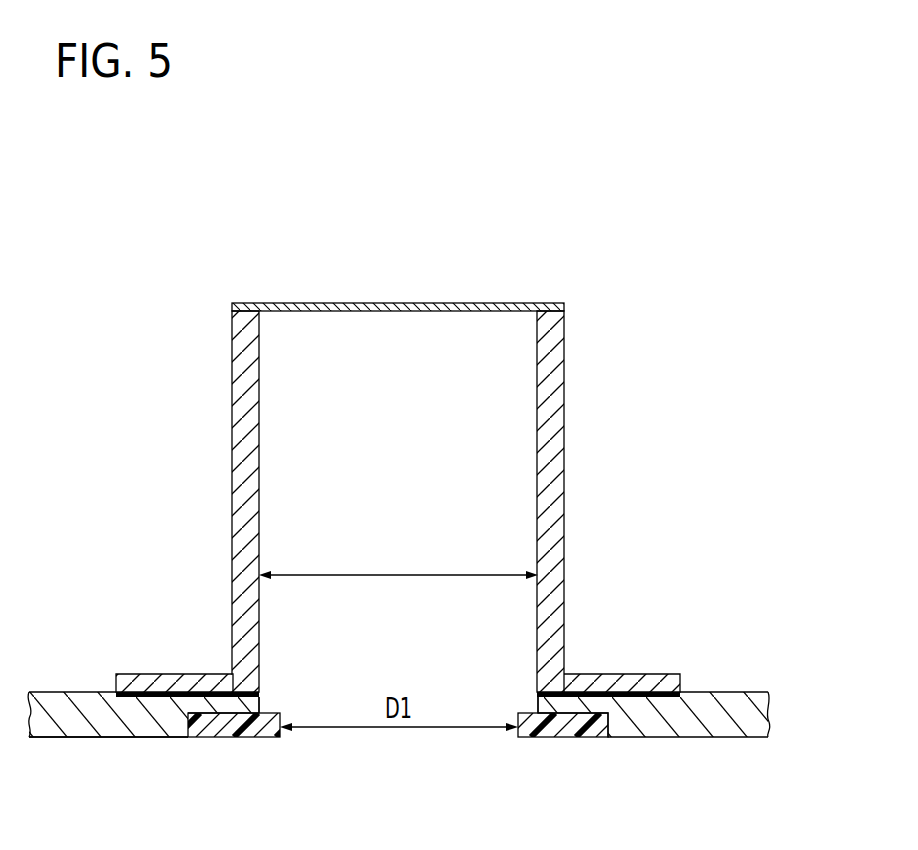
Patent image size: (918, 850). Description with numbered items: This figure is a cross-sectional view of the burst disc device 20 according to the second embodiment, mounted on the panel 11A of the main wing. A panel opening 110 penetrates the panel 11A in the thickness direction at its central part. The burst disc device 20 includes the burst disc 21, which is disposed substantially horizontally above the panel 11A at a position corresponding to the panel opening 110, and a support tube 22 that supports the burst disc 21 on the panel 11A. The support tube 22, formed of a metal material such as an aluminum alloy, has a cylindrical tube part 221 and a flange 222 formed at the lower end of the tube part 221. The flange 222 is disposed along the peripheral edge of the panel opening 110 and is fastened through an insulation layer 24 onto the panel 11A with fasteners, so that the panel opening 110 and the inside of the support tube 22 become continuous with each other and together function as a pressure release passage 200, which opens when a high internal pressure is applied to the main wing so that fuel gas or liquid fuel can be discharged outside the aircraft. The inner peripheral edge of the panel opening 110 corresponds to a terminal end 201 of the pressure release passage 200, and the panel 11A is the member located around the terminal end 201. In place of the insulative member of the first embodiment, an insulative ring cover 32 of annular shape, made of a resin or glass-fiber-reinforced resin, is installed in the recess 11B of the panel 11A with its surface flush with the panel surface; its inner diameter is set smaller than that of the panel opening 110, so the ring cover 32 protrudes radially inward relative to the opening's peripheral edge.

The burst disc device 20 is at (398, 461).
The burst disc 21 is at (345, 303).
The support tube 22 is at (564, 565).
The tube part 221 is at (233, 542).
The flange 222 is at (162, 674).
The insulation layer 24 is at (633, 674).
The pressure release passage 200 is at (420, 468).
The terminal end 201 is at (259, 703).
The panel opening 110 is at (537, 705).
The panel 11A is at (717, 737).
The recess 11B is at (203, 737).
The ring cover 32 is at (220, 737).